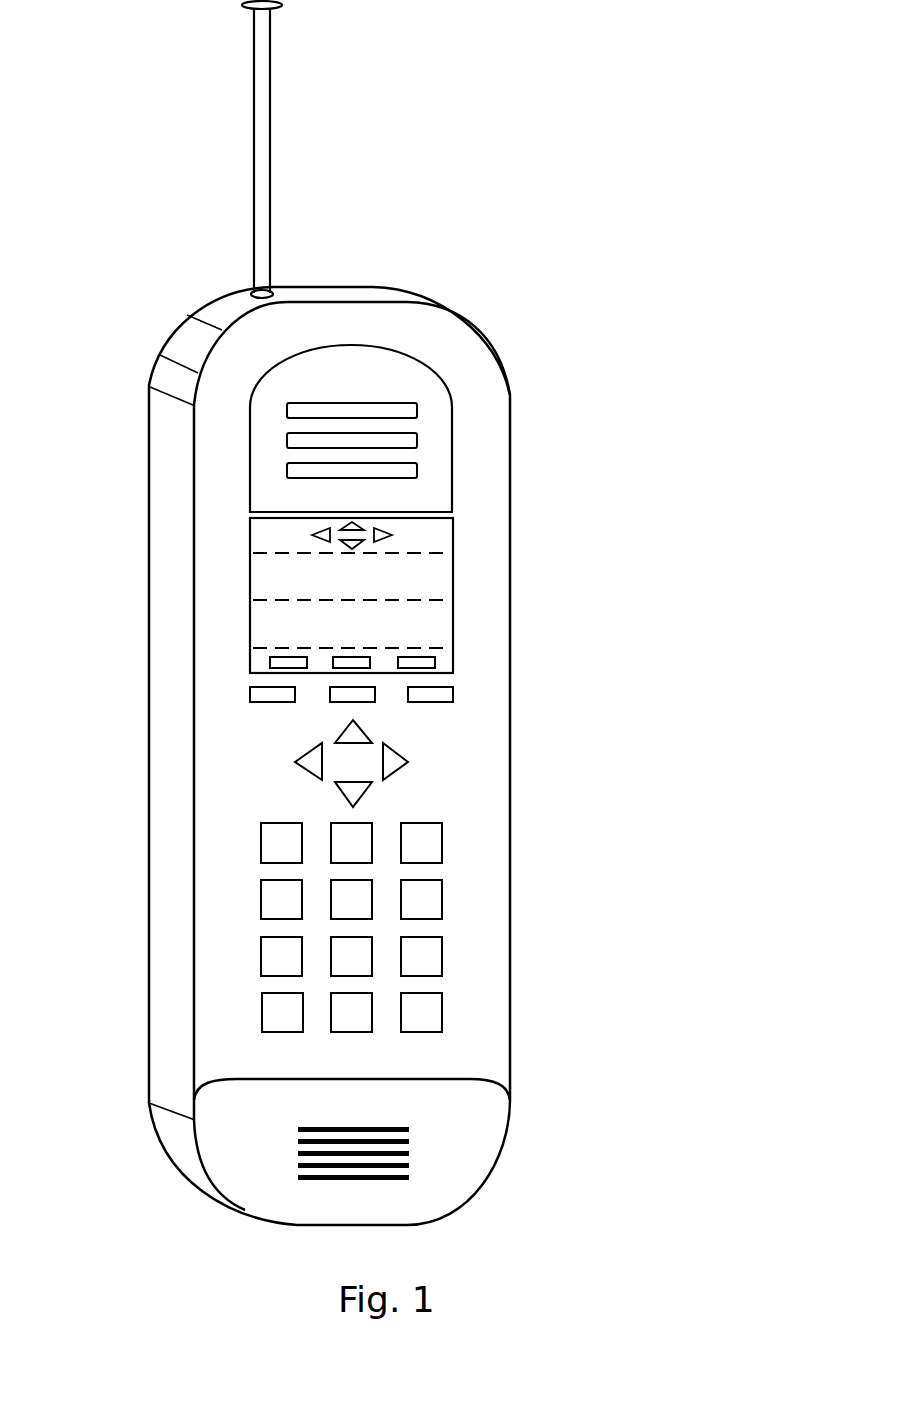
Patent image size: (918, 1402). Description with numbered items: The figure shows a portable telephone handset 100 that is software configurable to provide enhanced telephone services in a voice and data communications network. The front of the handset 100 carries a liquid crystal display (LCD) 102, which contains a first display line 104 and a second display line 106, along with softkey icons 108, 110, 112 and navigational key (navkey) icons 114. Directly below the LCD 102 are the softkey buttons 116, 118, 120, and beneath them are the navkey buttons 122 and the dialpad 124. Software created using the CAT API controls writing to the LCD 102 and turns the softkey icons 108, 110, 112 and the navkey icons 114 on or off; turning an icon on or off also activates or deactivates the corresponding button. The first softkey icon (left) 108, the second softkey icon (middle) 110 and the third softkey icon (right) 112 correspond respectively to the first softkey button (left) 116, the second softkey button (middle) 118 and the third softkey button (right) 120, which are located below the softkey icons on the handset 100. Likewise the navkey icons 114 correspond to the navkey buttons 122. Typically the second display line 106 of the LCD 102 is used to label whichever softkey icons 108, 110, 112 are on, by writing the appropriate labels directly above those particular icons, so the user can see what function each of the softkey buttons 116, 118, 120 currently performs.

The portable telephone handset 100 is at (404, 180).
The liquid crystal display (LCD) 102 is at (220, 543).
The first display line 104 is at (450, 573).
The second display line 106 is at (450, 627).
The first softkey icon (left) 108 is at (250, 670).
The second softkey icon (middle) 110 is at (330, 663).
The third softkey icon (right) 112 is at (437, 662).
The navigational key (navkey) icons 114 is at (413, 531).
The first softkey button (left) 116 is at (262, 703).
The second softkey button (middle) 118 is at (337, 705).
The third softkey button (right) 120 is at (453, 693).
The navkey buttons 122 is at (389, 733).
The dialpad 124 is at (452, 864).